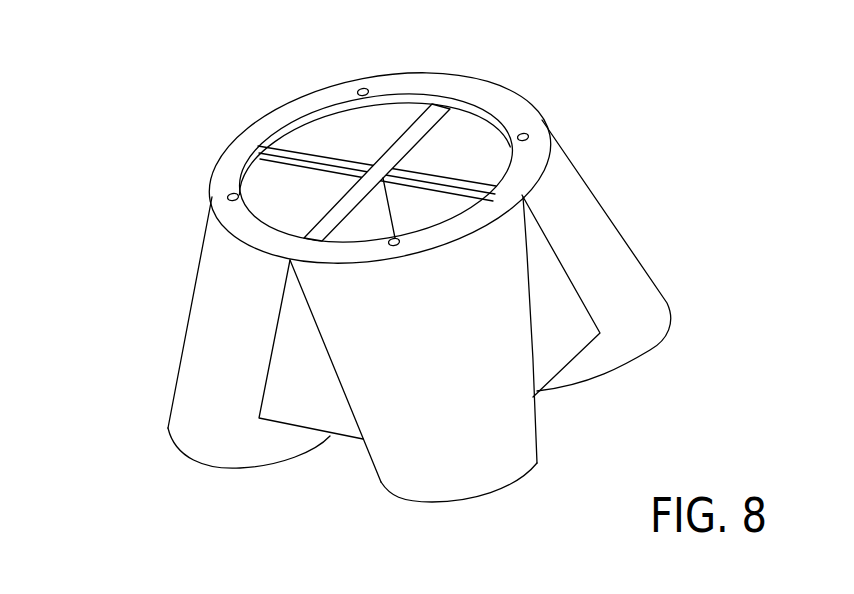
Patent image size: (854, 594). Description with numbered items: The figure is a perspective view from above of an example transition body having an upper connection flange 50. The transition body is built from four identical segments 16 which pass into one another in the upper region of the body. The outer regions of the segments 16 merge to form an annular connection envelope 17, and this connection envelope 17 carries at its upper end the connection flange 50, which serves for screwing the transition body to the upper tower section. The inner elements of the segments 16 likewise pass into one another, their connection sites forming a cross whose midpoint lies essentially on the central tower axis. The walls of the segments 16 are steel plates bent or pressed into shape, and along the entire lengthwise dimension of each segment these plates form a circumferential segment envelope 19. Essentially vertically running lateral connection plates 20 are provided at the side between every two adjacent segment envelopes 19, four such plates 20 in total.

The upper connection flange 50 is at (420, 95).
The connection envelope 17 is at (242, 238).
The segments 16 is at (307, 137).
The segment envelope 19 is at (193, 408).
The lateral connection plates 20 is at (292, 368).